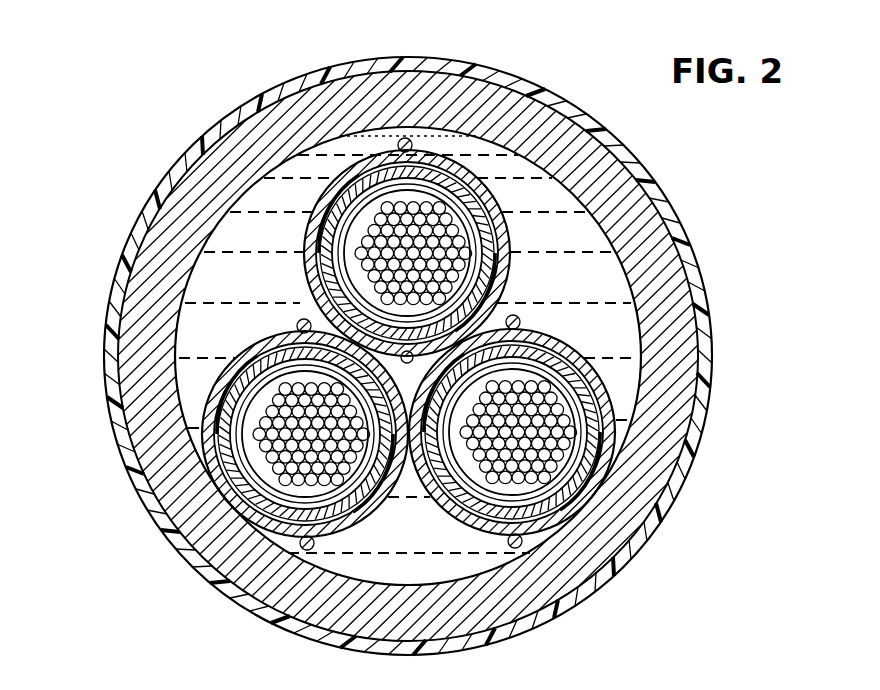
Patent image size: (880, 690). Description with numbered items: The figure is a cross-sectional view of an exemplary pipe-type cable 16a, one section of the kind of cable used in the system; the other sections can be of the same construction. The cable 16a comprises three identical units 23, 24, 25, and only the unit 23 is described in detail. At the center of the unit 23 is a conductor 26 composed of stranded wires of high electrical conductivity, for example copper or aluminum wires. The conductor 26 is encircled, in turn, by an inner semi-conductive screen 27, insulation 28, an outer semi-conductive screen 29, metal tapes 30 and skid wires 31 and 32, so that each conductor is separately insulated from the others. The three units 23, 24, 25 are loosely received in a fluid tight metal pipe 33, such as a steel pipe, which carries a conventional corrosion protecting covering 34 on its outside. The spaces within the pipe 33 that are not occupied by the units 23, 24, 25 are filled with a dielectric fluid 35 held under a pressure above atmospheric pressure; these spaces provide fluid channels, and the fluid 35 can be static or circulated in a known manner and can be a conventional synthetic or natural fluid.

The pipe-type cable 16a is at (659, 178).
The unit 23 is at (510, 231).
The unit 24 is at (558, 342).
The unit 25 is at (253, 348).
The conductor 26 is at (236, 478).
The inner semi-conductive screen 27 is at (215, 443).
The insulation 28 is at (230, 512).
The outer semi-conductive screen 29 is at (212, 571).
The metal tapes 30 is at (207, 416).
The skid wire 31 is at (410, 140).
The skid wire 32 is at (318, 543).
The metal pipe 33 is at (255, 130).
The corrosion protecting covering 34 is at (303, 85).
The dielectric fluid 35 is at (372, 130).